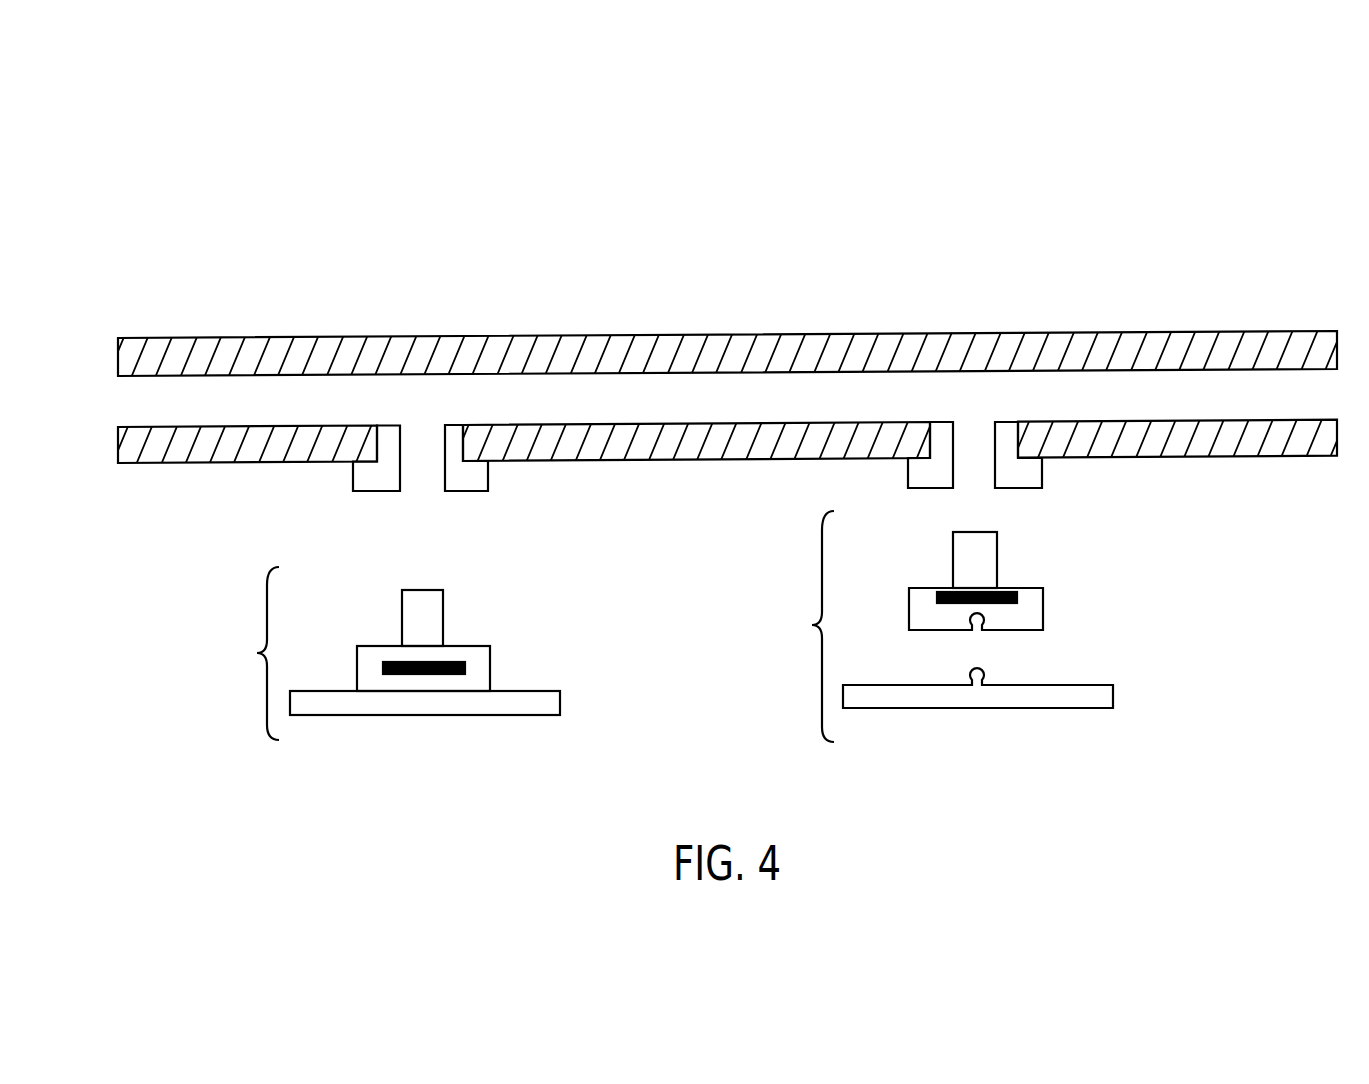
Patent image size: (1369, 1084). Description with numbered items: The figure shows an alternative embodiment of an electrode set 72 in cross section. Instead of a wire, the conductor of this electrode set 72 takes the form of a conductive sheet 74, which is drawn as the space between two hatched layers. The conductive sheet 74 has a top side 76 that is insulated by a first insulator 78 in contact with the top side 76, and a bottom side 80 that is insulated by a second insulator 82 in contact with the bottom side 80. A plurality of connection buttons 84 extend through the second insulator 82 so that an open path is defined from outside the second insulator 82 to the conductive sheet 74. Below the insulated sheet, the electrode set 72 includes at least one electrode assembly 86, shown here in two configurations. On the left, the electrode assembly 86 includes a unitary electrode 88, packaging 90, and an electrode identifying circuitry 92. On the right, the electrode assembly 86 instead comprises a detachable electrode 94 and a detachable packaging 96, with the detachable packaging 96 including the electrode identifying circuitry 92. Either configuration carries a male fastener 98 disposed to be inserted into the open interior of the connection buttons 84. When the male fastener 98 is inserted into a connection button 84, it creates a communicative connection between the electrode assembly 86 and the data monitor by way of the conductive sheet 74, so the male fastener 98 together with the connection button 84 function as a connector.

The electrode set 72 is at (971, 128).
The conductive sheet 74 is at (815, 392).
The top side 76 is at (980, 373).
The first insulator 78 is at (628, 350).
The bottom side 80 is at (132, 428).
The second insulator 82 is at (253, 453).
The connection buttons 84 is at (360, 480).
The electrode assembly 86 is at (523, 626).
The unitary electrode 88 is at (562, 692).
The packaging 90 is at (492, 656).
The electrode identifying circuitry 92 is at (453, 660).
The detachable electrode 94 is at (1097, 683).
The detachable packaging 96 is at (1045, 612).
The male fastener 98 is at (430, 590).